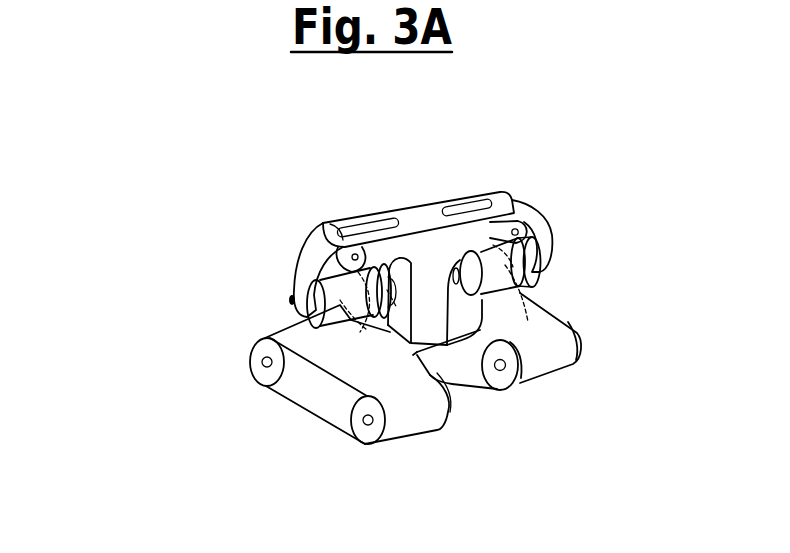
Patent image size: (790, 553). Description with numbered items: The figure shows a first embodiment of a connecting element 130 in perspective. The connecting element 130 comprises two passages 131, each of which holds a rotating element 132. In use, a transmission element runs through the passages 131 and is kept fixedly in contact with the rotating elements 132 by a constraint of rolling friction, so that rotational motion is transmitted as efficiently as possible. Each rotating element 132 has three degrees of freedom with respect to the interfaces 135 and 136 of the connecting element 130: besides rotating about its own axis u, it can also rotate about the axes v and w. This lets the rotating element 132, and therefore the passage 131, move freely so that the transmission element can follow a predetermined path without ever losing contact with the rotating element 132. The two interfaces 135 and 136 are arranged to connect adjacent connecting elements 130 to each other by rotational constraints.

The connecting element 130 is at (152, 150).
The passage 131 is at (540, 286).
The rotating element 132 is at (517, 283).
The interface 135 is at (494, 415).
The interface 136 is at (251, 273).
The own axis of the rotating element u is at (287, 301).
The rotation axis v is at (330, 228).
The rotation axis w is at (425, 222).